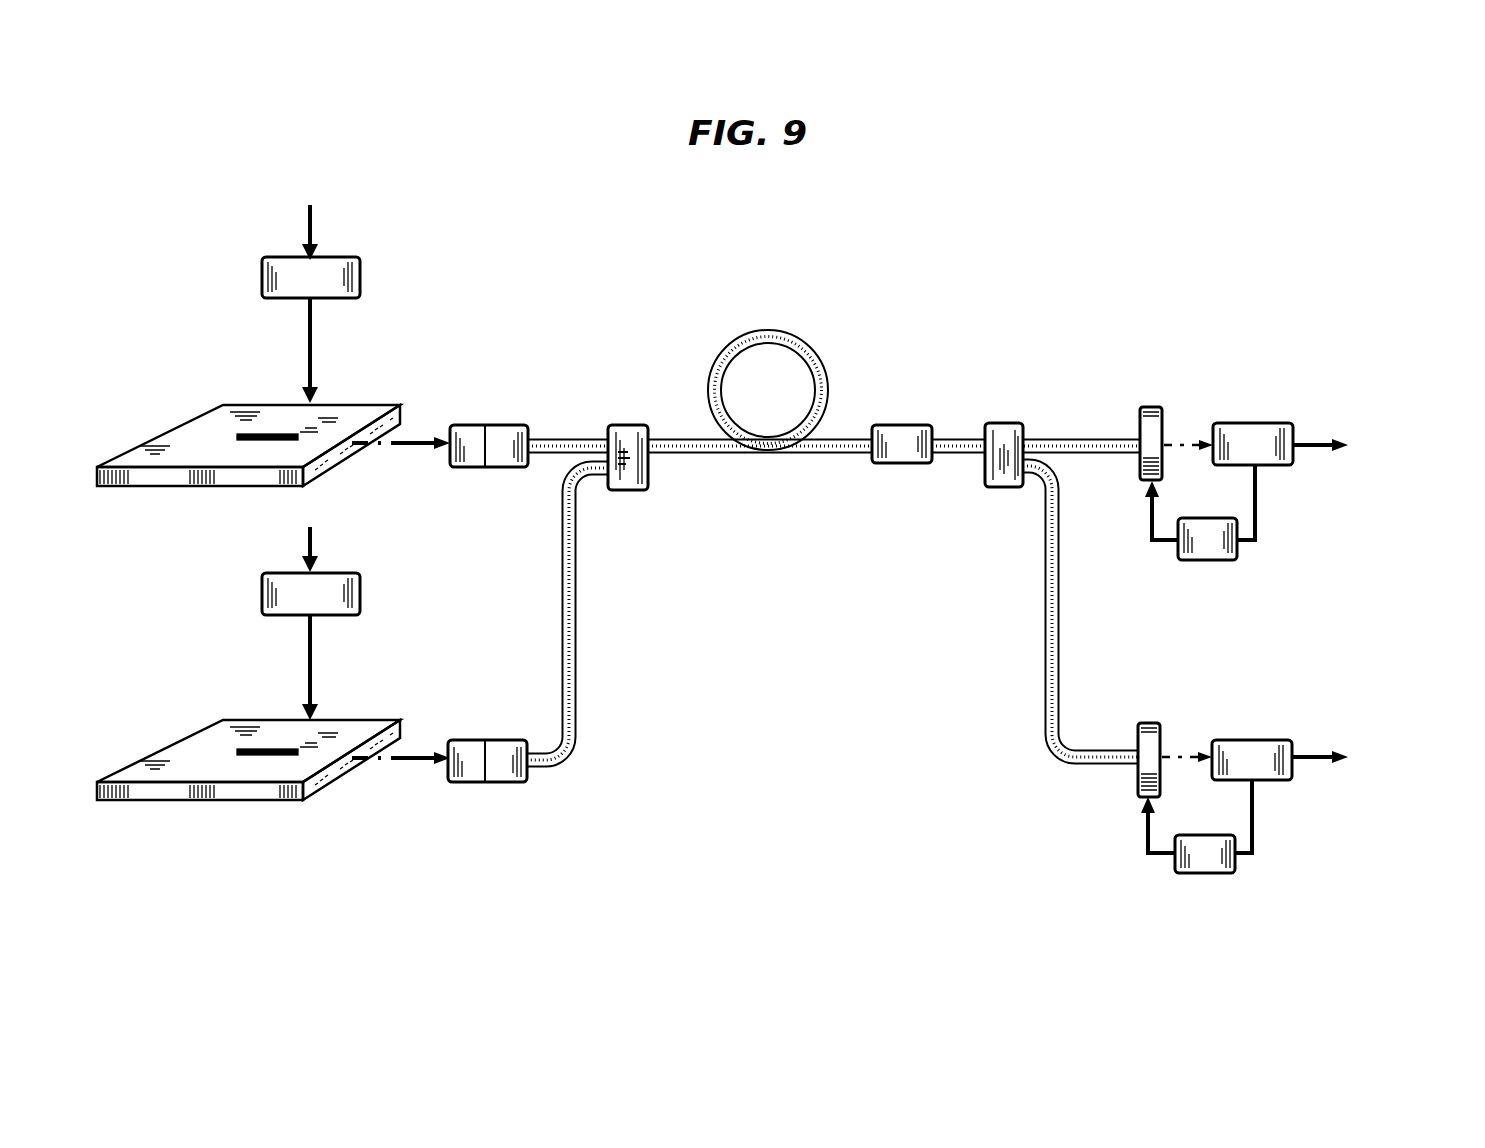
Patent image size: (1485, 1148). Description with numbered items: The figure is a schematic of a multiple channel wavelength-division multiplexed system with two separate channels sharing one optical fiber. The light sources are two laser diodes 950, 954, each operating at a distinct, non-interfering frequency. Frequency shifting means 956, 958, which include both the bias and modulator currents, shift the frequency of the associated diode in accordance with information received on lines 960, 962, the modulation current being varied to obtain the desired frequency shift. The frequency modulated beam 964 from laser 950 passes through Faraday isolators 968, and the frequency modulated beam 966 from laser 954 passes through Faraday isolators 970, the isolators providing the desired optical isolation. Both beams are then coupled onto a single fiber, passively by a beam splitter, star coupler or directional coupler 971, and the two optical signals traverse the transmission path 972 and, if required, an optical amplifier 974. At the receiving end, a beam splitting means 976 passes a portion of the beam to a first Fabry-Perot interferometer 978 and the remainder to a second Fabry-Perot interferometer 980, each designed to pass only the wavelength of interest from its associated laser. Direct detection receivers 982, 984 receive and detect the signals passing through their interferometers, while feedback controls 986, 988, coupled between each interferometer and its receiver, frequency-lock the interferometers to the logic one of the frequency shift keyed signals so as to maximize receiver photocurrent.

The laser diode 950 is at (192, 432).
The laser diode 954 is at (180, 748).
The frequency shifting means 956 is at (360, 278).
The frequency shifting means 958 is at (360, 592).
The information line 960 is at (313, 222).
The information line 962 is at (313, 545).
The frequency modulated beam 964 is at (418, 440).
The frequency modulated beam 966 is at (412, 766).
The Faraday isolators 968 is at (505, 423).
The Faraday isolators 970 is at (497, 784).
The directional coupler 971 is at (622, 490).
The transmission path 972 is at (783, 334).
The optical amplifier 974 is at (907, 426).
The beam splitting means 976 is at (1005, 428).
The first Fabry-Perot interferometer 978 is at (1150, 406).
The second Fabry-Perot interferometer 980 is at (1080, 805).
The direct detection receiver 982 is at (1260, 432).
The direct detection receiver 984 is at (1255, 748).
The feedback control 986 is at (1214, 556).
The feedback control 988 is at (1205, 876).